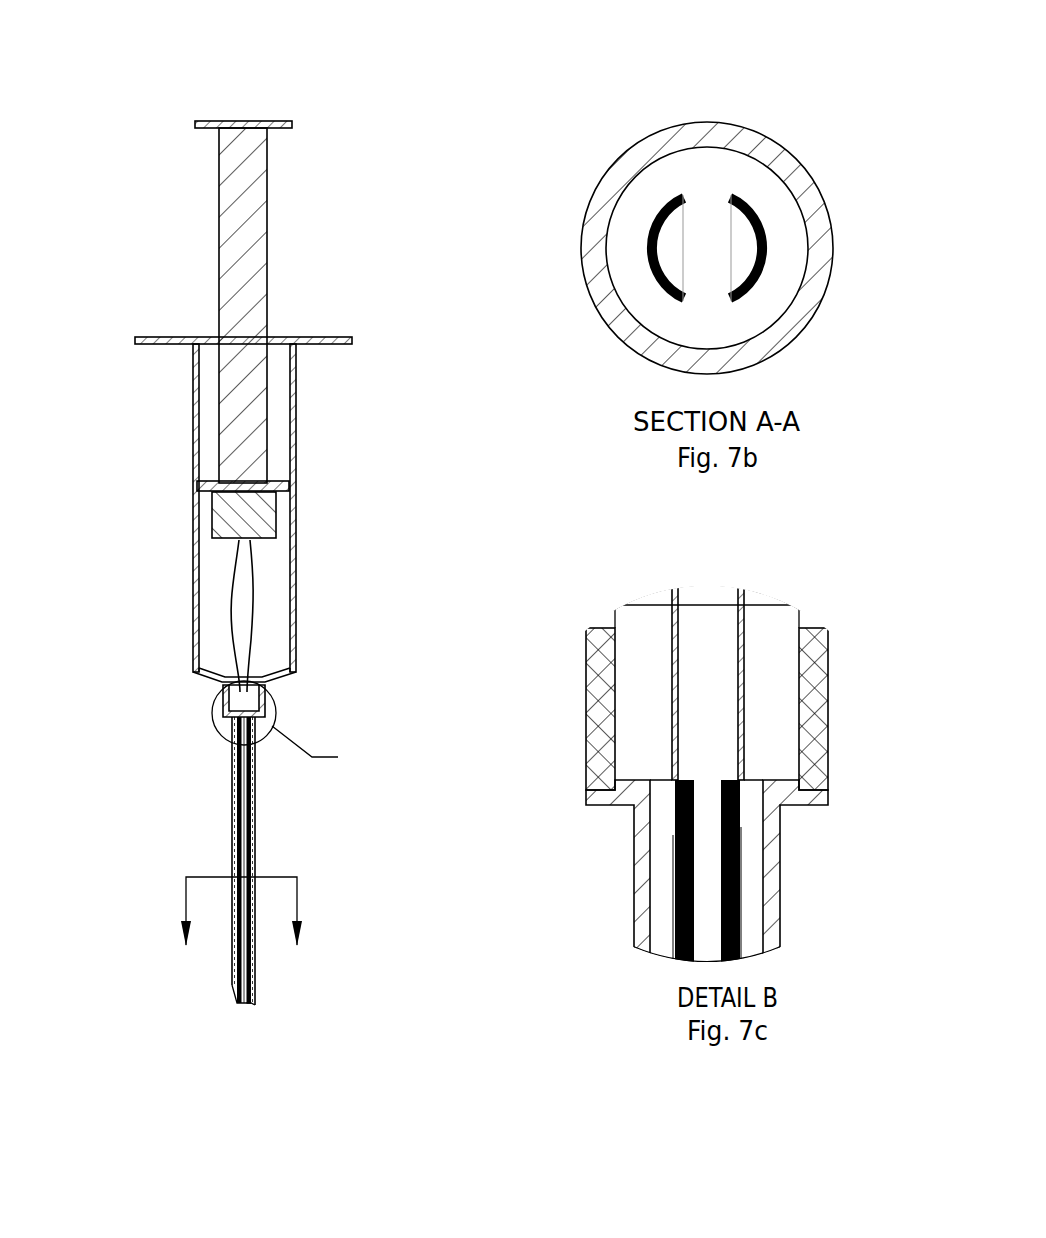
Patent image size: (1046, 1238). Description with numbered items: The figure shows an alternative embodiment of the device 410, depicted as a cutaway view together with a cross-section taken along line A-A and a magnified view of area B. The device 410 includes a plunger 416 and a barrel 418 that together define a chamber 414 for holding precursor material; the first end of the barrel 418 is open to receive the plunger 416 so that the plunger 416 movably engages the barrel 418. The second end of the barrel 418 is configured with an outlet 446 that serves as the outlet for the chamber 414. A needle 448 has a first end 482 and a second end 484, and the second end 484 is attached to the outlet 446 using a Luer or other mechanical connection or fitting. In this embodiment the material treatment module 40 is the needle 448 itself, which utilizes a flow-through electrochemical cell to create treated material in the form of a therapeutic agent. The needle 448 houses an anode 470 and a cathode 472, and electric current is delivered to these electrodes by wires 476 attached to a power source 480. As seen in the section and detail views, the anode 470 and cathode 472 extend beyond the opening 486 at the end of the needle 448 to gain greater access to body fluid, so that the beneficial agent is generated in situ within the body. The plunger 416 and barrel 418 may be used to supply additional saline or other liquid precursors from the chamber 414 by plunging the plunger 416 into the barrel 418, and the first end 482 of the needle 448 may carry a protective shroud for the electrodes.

In FIG. 7A, the device 410 is at (154, 104).
In FIG. 7A, the plunger 416 is at (258, 242).
In FIG. 7A, the barrel 418 is at (296, 397).
In FIG. 7A, the power source 480 is at (258, 508).
In FIG. 7A, the wires 476 is at (253, 573).
In FIG. 7C, the wires 476 is at (672, 652).
In FIG. 7A, the chamber 414 is at (287, 509).
In FIG. 7A, the outlet 446 is at (262, 690).
In FIG. 7C, the outlet 446 is at (817, 660).
In FIG. 7A, the second end of the needle 484 is at (232, 773).
In FIG. 7A, the needle 448 is at (241, 880).
In FIG. 7B, the needle 448 is at (770, 147).
In FIG. 7A, the material treatment module 40 is at (212, 847).
In FIG. 7A, the anode 470 is at (253, 952).
In FIG. 7B, the anode 470 is at (755, 210).
In FIG. 7C, the anode 470 is at (738, 875).
In FIG. 7A, the cathode 472 is at (238, 992).
In FIG. 7B, the cathode 472 is at (656, 208).
In FIG. 7C, the cathode 472 is at (672, 940).
In FIG. 7A, the first end of the needle 482 is at (252, 992).
In FIG. 7A, the opening 486 is at (251, 1004).